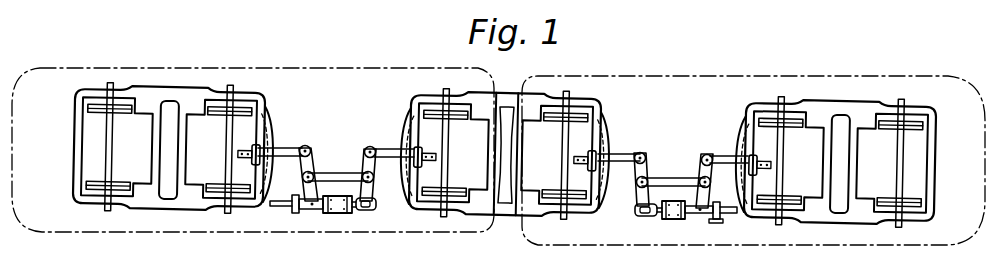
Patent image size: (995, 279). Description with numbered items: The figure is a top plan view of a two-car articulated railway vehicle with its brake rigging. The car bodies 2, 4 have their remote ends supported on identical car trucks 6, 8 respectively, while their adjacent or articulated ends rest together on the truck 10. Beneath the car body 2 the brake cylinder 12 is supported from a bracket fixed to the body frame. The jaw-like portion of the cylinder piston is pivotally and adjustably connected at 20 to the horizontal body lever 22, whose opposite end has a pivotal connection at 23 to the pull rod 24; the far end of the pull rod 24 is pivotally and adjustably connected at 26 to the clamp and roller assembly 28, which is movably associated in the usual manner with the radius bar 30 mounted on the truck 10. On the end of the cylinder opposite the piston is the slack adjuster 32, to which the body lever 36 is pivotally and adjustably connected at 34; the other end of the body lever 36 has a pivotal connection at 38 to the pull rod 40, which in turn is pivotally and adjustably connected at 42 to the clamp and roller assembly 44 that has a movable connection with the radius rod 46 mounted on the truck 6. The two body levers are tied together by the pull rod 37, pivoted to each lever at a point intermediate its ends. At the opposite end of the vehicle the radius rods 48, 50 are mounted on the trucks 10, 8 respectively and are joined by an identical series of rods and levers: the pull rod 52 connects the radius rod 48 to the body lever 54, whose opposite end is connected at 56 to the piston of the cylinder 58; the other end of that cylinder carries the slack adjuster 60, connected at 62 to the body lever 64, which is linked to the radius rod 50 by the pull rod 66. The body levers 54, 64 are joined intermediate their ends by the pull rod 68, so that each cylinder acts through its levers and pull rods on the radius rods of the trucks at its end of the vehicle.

The car body 2 is at (125, 67).
The car body 4 is at (787, 80).
The car truck 6 is at (180, 128).
The car truck 8 is at (842, 164).
The truck 10 is at (517, 154).
The brake cylinder 12 is at (337, 215).
The pivotal and adjustable connection 20 is at (364, 212).
The horizontal body lever 22 is at (366, 147).
The pivotal connection 23 is at (372, 147).
The pull rod 24 is at (388, 149).
The pivotal and adjustable connection 26 is at (424, 165).
The clamp and roller assembly 28 is at (418, 155).
The radius bar 30 is at (407, 172).
The slack adjuster 32 is at (275, 207).
The pivotal and adjustable connection 34 is at (309, 210).
The body lever 36 is at (311, 160).
The pull rod 37 is at (336, 173).
The pivotal connection 38 is at (304, 145).
The pull rod 40 is at (282, 148).
The pivotal and adjustable connection 42 is at (246, 156).
The clamp and roller assembly 44 is at (250, 146).
The radius rod 46 is at (266, 165).
The radius rod 48 is at (604, 145).
The radius rod 50 is at (748, 215).
The pull rod 52 is at (623, 155).
The body lever 54 is at (637, 172).
The connection 56 is at (643, 215).
The cylinder 58 is at (677, 220).
The slack adjuster 60 is at (717, 223).
The connection 62 is at (700, 214).
The body lever 64 is at (700, 172).
The pull rod 66 is at (725, 155).
The pull rod 68 is at (672, 178).